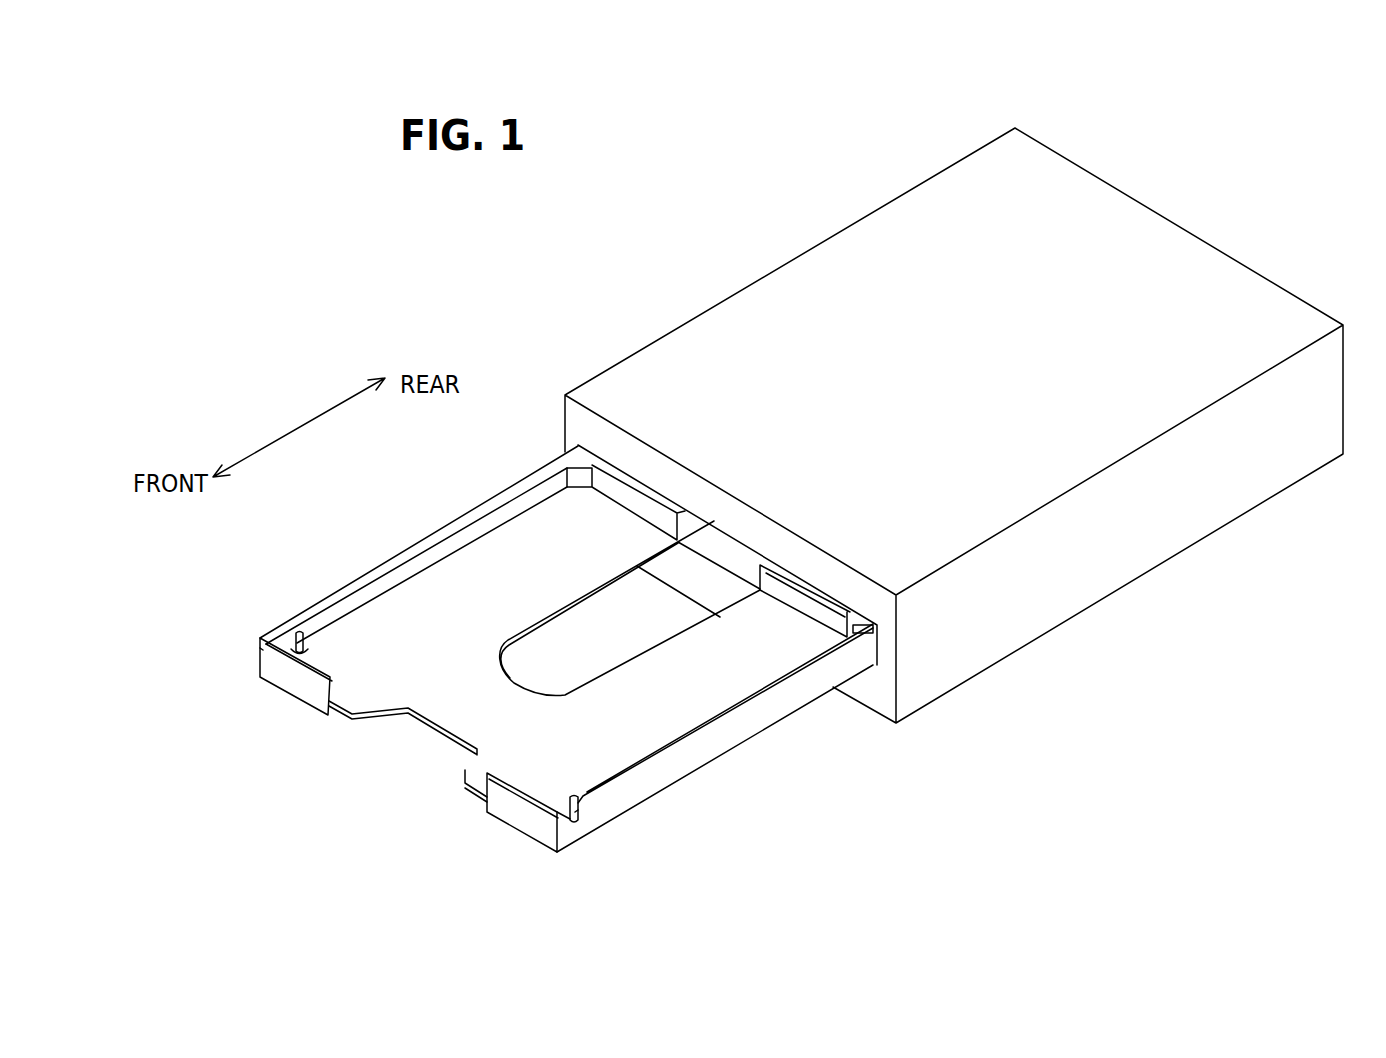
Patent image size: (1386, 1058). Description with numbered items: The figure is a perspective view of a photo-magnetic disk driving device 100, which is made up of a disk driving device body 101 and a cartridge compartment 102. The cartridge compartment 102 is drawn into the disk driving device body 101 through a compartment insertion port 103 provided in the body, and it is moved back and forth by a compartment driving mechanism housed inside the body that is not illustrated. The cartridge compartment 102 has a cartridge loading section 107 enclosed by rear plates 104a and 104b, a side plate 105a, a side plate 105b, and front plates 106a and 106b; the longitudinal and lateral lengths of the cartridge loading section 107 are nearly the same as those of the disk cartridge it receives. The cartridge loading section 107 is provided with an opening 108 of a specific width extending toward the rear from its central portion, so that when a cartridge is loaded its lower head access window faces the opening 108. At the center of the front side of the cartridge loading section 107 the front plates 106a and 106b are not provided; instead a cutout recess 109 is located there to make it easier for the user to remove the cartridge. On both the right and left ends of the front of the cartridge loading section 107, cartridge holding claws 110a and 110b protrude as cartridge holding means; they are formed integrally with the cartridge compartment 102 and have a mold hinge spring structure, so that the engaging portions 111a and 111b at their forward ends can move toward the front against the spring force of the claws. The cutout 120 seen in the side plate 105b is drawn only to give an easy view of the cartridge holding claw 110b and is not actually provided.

The photo-magnetic disk driving device 100 is at (1007, 803).
The disk driving device body 101 is at (972, 170).
The cartridge compartment 102 is at (707, 770).
The compartment insertion port 103 is at (873, 657).
The rear plate 104a is at (615, 490).
The rear plate 104b is at (808, 618).
The side plate 105a is at (363, 577).
The side plate 105b is at (752, 718).
The front plate 106a is at (295, 683).
The front plate 106b is at (517, 817).
The cartridge loading section 107 is at (546, 659).
The opening 108 is at (566, 613).
The cutout recess 109 is at (373, 713).
The cartridge holding claw 110a is at (264, 646).
The cartridge holding claw 110b is at (568, 823).
The engaging portion 111a is at (297, 632).
The engaging portion 111b is at (578, 813).
The cutout 120 is at (477, 760).